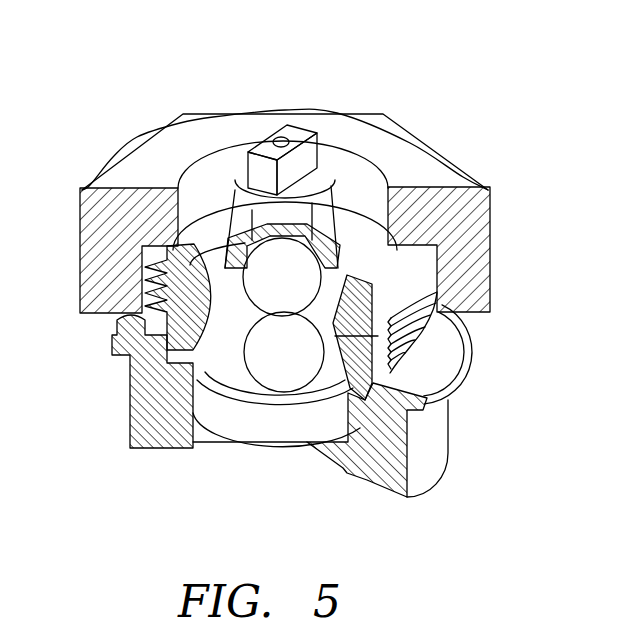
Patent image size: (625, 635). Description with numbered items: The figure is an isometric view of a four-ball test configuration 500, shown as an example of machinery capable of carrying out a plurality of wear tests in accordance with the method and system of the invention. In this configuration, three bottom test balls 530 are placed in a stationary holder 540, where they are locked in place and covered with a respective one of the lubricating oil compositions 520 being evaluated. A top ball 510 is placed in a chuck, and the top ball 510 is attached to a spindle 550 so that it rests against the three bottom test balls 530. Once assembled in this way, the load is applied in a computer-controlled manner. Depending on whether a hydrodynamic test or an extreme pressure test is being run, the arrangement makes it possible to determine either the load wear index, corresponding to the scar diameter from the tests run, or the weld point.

The Four-Ball Block Test 500 is at (306, 262).
The top ball 510 is at (270, 277).
The lubricating oil composition 520 is at (212, 333).
The bottom test balls 530 is at (270, 365).
The stationary holder 540 is at (455, 352).
The spindle 550 is at (250, 165).